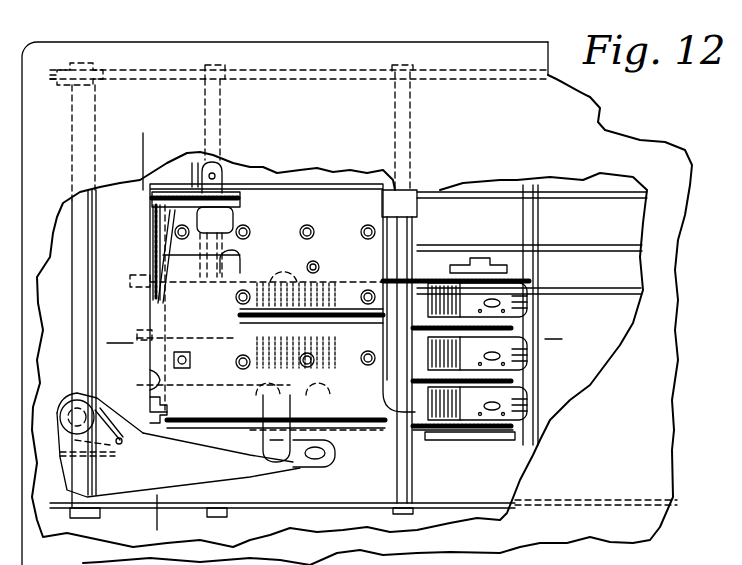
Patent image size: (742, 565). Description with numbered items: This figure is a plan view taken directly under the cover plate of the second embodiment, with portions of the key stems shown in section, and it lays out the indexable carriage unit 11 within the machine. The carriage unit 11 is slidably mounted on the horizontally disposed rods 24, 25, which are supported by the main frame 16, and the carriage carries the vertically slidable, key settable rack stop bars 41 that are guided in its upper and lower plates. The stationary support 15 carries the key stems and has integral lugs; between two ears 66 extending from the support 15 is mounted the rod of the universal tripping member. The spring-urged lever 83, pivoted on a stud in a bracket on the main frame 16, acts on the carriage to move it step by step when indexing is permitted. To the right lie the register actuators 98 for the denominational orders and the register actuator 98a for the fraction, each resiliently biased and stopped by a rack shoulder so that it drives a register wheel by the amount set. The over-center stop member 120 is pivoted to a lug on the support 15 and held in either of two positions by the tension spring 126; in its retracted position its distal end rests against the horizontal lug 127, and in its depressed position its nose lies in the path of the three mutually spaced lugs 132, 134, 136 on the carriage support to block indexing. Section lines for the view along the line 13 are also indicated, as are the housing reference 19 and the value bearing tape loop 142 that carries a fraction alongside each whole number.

The carriage unit 11 is at (141, 143).
The section line 13- 13 is at (110, 341).
The support 15 is at (332, 200).
The main frame 16 is at (373, 487).
The housing cover 19 is at (478, 50).
The rod 24 is at (213, 495).
The rod 25 is at (417, 480).
The rack stop bar 41 is at (305, 268).
The ear 66 is at (185, 415).
The lever 83 is at (252, 470).
The register actuator 98 is at (600, 196).
The register actuator 98a is at (625, 293).
The stop member 120 is at (152, 253).
The tension spring 126 is at (153, 232).
The lug 127 is at (140, 337).
The lug 132 is at (157, 297).
The lug 134 is at (133, 378).
The lug 136 is at (147, 410).
The value bearing tape loop 142 is at (527, 290).